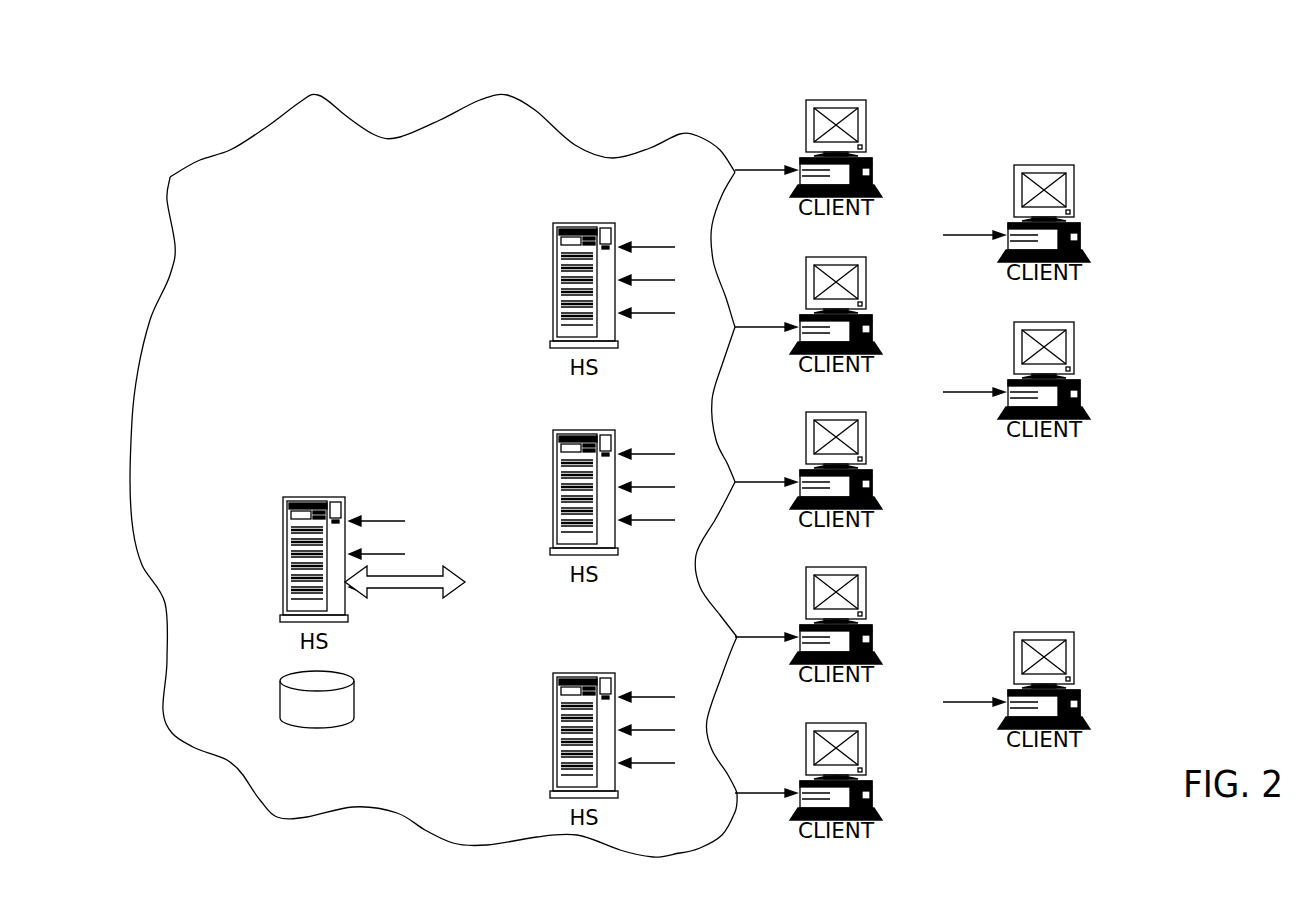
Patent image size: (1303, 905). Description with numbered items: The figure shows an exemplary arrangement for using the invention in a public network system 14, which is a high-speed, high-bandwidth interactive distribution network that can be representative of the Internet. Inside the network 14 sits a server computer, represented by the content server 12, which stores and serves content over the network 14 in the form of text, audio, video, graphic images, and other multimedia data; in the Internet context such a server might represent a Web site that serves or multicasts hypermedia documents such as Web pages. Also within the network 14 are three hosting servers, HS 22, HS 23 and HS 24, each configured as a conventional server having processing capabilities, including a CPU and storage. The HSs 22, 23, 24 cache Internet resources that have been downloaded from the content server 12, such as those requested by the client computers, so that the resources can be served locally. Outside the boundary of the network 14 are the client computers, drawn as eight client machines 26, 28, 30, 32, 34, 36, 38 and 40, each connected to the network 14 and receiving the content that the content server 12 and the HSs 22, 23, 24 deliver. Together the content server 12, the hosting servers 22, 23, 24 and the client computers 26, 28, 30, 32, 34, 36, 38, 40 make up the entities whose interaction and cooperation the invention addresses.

The public network system 14 is at (168, 147).
The content server 12 is at (252, 542).
The HS 22 is at (595, 673).
The HS 23 is at (595, 430).
The HS 24 is at (595, 223).
The client computer 26 is at (870, 781).
The client computer 28 is at (1078, 690).
The client computer 30 is at (870, 625).
The client computer 32 is at (870, 470).
The client computer 34 is at (1078, 380).
The client computer 36 is at (870, 315).
The client computer 38 is at (1078, 223).
The client computer 40 is at (870, 158).